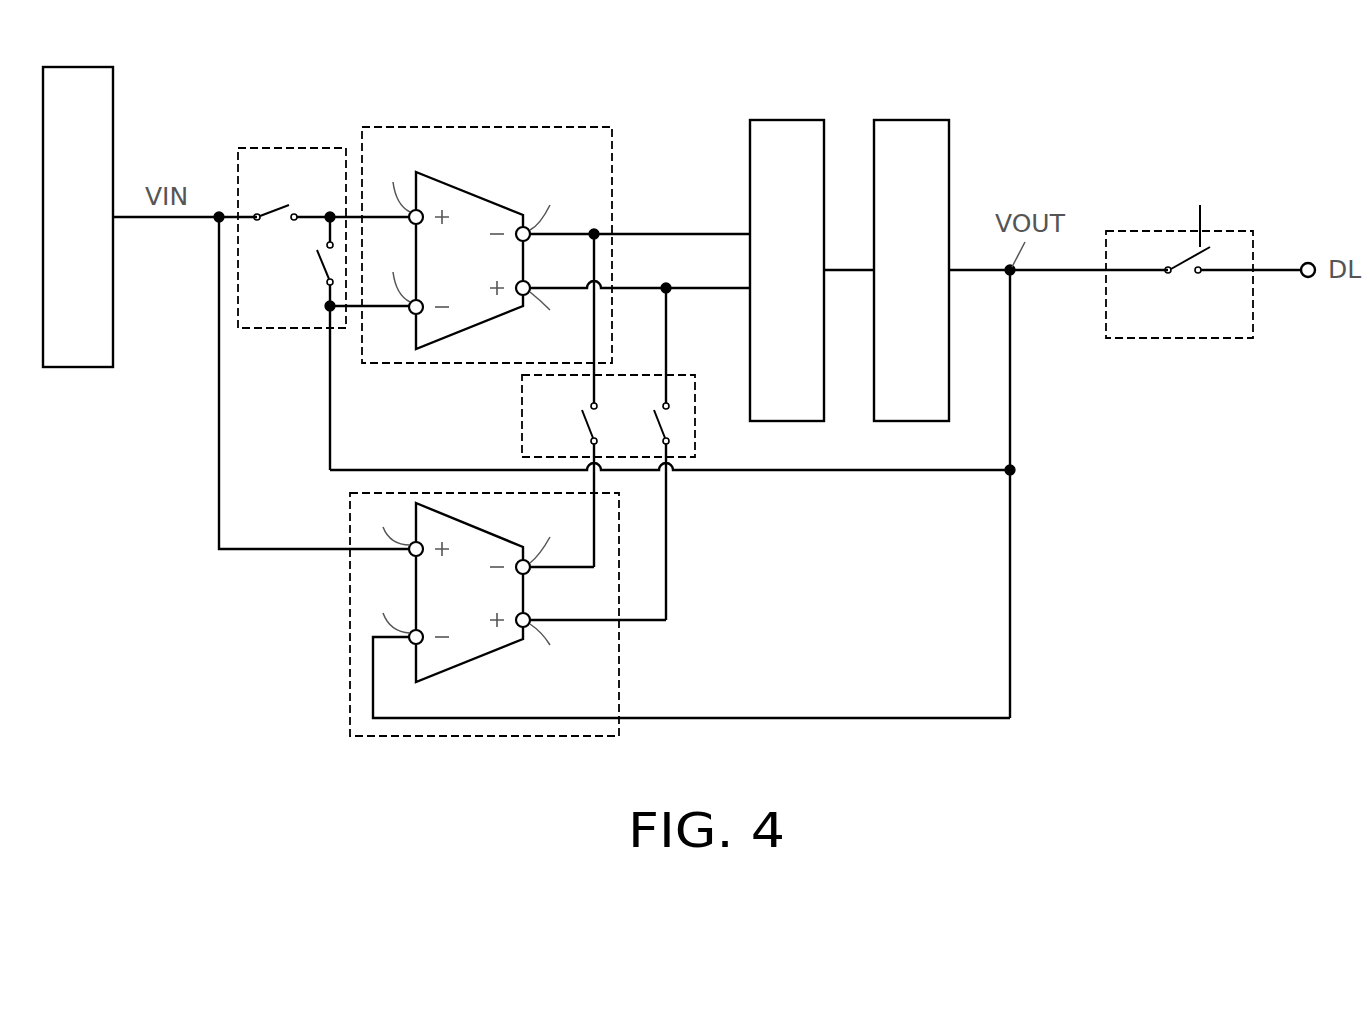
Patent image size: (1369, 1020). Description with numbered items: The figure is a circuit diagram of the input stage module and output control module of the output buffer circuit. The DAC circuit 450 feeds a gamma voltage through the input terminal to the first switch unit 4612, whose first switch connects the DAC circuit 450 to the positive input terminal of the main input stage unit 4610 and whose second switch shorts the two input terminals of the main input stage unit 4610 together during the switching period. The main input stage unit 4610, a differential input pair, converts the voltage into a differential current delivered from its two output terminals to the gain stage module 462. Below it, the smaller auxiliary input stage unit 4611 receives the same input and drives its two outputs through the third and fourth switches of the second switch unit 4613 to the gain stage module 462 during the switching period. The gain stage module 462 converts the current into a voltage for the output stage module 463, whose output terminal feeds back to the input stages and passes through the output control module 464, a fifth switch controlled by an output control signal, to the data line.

The DAC circuit 450 is at (80, 67).
The first switch unit 4612 is at (292, 148).
The main input stage unit 4610 is at (487, 127).
The second switch unit 4613 is at (522, 413).
The auxiliary input stage unit 4611 is at (619, 677).
The gain stage module 462 is at (777, 120).
The output stage module 463 is at (902, 120).
The output control module 464 is at (1233, 231).